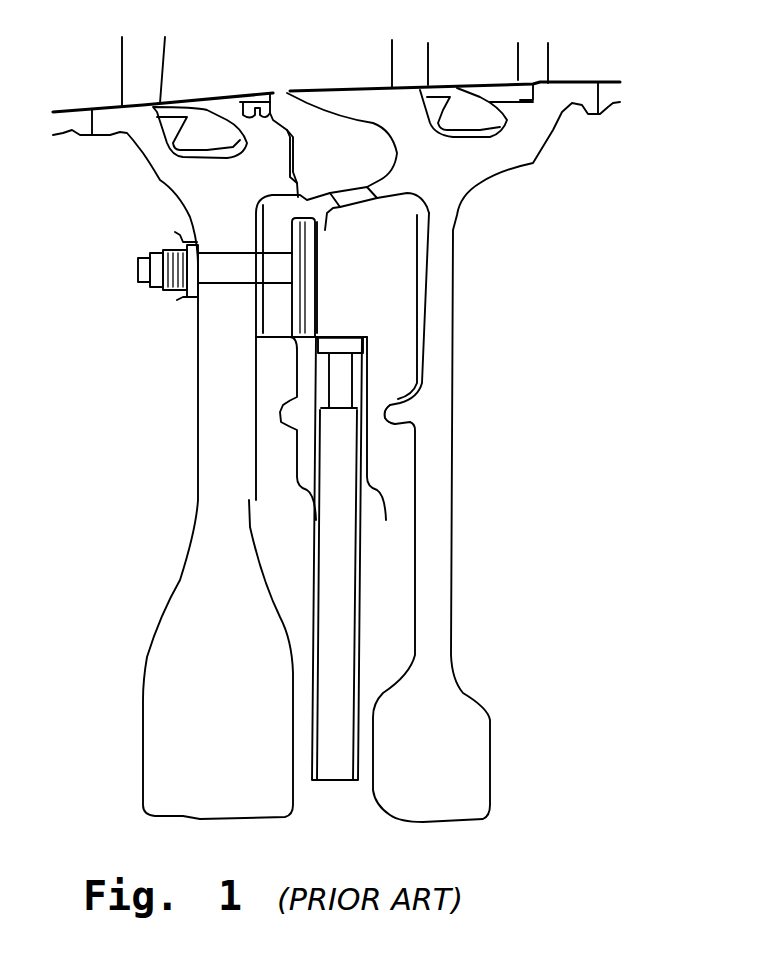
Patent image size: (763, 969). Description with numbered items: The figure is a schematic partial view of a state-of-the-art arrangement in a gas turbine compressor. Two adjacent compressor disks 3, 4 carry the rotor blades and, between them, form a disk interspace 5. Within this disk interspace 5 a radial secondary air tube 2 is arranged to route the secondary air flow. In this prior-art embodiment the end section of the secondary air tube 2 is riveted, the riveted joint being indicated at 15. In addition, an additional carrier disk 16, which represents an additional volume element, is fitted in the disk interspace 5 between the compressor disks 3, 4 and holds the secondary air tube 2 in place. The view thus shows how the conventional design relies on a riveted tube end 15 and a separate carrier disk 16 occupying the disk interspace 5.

The secondary air tube 2 is at (360, 660).
The compressor disk 3 is at (193, 605).
The compressor disk 4 is at (433, 568).
The disk interspace 5 is at (283, 525).
The riveted end section 15 is at (380, 345).
The additional carrier disk 16 is at (403, 421).